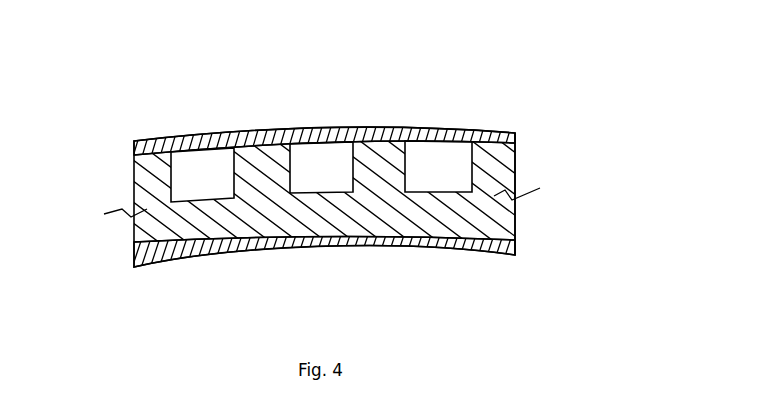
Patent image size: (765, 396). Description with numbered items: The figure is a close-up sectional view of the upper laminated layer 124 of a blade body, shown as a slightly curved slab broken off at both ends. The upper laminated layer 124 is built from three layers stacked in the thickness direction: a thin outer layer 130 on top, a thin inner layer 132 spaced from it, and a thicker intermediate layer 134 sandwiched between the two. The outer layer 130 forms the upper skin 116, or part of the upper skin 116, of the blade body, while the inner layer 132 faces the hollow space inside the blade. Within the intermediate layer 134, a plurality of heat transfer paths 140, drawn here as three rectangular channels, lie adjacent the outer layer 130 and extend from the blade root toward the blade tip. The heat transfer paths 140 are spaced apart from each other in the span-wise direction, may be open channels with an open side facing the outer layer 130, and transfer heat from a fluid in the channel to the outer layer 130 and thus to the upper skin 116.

The upper laminated layer 124 is at (73, 35).
The upper skin 116 is at (255, 130).
The outer layer 130 is at (480, 133).
The inner layer 132 is at (452, 243).
The intermediate layer 134 is at (502, 178).
The heat transfer paths 140 is at (323, 158).